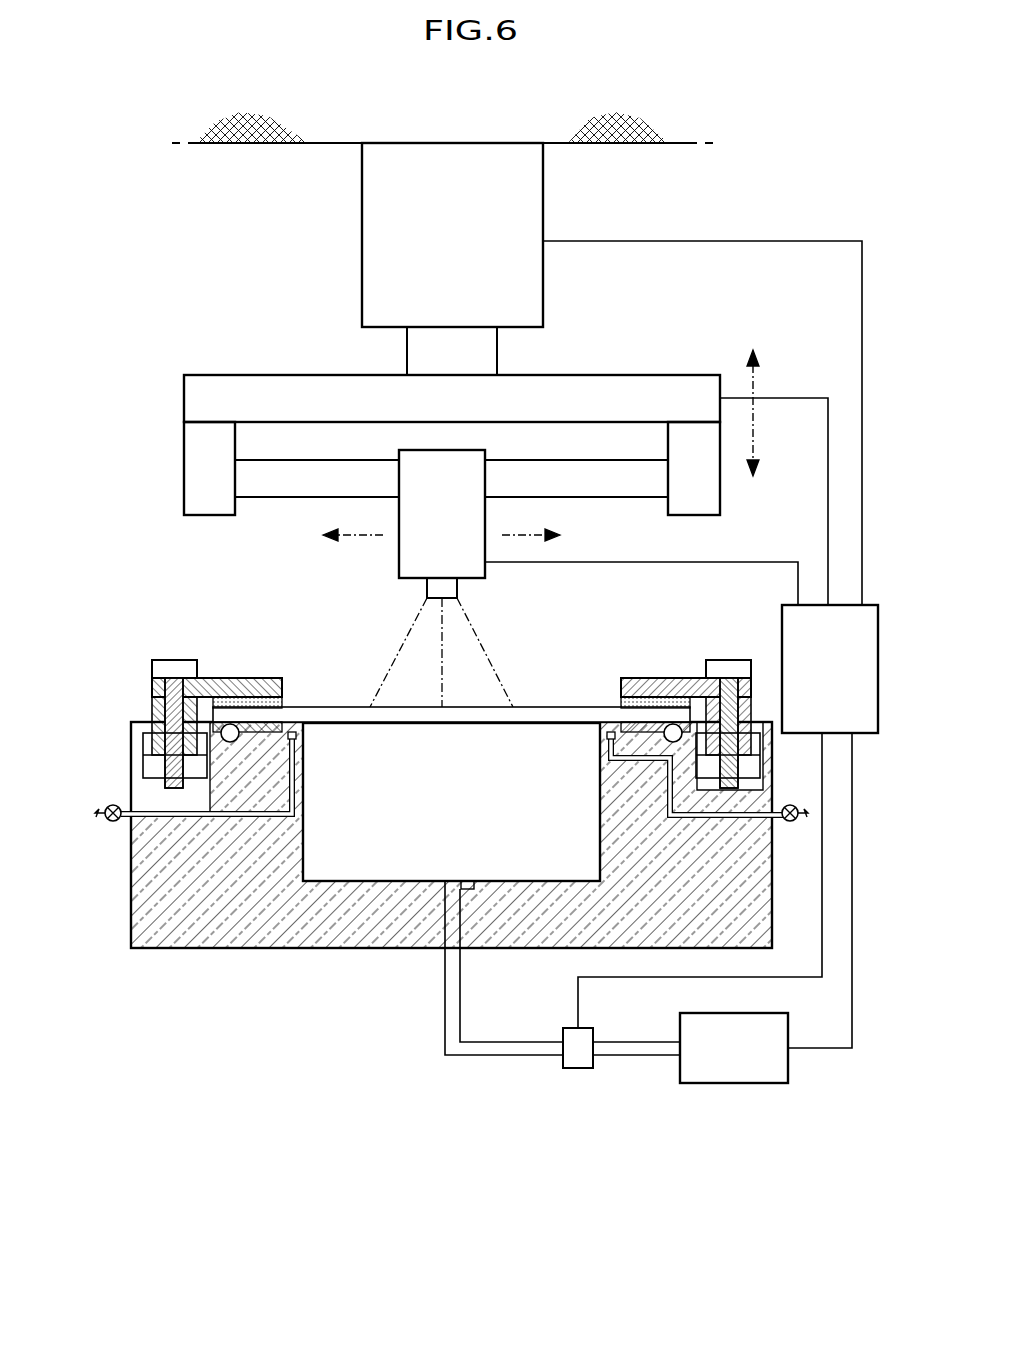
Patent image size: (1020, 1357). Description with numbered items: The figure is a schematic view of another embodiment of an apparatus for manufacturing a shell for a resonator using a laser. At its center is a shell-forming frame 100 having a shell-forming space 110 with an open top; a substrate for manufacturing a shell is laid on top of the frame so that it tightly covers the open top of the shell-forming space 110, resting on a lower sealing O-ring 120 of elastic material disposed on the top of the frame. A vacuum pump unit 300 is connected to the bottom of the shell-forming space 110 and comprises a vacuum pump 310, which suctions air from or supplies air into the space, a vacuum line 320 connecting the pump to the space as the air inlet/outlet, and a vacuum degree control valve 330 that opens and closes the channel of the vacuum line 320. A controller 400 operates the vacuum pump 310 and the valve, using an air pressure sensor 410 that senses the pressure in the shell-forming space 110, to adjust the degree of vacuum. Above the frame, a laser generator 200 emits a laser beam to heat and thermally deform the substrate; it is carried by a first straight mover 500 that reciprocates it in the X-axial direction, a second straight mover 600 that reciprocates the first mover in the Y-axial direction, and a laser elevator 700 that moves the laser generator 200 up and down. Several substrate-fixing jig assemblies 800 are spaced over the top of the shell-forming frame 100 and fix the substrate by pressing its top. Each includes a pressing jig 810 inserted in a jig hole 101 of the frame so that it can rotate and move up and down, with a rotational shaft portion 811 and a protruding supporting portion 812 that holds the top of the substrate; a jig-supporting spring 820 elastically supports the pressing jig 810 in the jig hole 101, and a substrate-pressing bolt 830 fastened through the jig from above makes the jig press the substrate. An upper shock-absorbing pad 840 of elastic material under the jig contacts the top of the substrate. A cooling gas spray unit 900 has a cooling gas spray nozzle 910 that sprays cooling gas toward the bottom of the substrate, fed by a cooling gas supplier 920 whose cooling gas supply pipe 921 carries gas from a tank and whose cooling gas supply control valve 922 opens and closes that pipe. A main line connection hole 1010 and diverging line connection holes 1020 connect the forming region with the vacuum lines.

The shell-forming frame 100 is at (451, 870).
The jig hole 101 is at (143, 757).
The shell-forming space 110 is at (312, 840).
The lower sealing O-ring 120 is at (178, 797).
The laser generator 200 is at (490, 582).
The vacuum pump unit 300 is at (637, 1044).
The vacuum pump 310 is at (792, 1093).
The vacuum line 320 is at (482, 1055).
The vacuum degree control valve 330 is at (578, 1068).
The controller 400 is at (782, 632).
The air pressure sensor 410 is at (470, 890).
The first straight mover 500 is at (277, 498).
The second straight mover 600 is at (192, 459).
The laser elevator 700 is at (373, 197).
The substrate-fixing jig assembly 800 is at (402, 680).
The pressing jig 810 is at (217, 635).
The rotational shaft portion 811 is at (275, 604).
The plate part 812 is at (262, 680).
The jig-supporting spring 820 is at (152, 760).
The substrate-pressing bolt 830 is at (149, 693).
The upper shock-absorbing pad 840 is at (238, 728).
The cooling gas spray unit 900 is at (435, 909).
The cooling gas spray nozzle 910 is at (240, 742).
The cooling gas supplier 920 is at (179, 889).
The cooling gas supply pipe 921 is at (173, 823).
The cooling gas supply control valve 922 is at (113, 823).
The main line connection hole 1010 is at (469, 652).
The diverging line connection hole 1020 is at (451, 652).